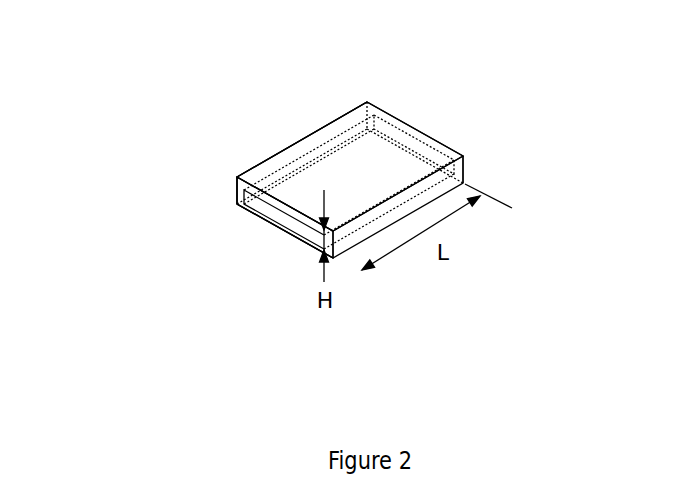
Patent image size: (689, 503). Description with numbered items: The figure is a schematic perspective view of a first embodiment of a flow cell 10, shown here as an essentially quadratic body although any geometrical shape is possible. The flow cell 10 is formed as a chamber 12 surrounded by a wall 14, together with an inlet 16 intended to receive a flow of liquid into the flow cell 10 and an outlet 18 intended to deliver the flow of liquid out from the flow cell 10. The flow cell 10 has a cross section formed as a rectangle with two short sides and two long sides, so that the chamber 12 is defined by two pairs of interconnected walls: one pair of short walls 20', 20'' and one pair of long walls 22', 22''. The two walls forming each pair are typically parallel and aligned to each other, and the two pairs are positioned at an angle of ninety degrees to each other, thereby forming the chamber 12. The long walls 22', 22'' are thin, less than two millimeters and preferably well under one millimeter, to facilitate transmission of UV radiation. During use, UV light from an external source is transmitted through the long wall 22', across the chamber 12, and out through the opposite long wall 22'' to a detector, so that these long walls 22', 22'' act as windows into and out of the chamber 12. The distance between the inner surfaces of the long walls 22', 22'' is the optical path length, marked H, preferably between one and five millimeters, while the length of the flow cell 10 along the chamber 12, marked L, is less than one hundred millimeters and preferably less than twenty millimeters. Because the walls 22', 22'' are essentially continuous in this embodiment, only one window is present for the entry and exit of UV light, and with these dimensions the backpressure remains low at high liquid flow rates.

The flow cell 10 is at (327, 203).
The chamber 12 is at (260, 273).
The wall 14 is at (193, 209).
The inlet 16 is at (410, 156).
The outlet 18 is at (196, 265).
The short wall 20' is at (516, 161).
The short wall 20'' is at (280, 113).
The long wall 22' is at (498, 105).
The long wall 22'' is at (243, 195).